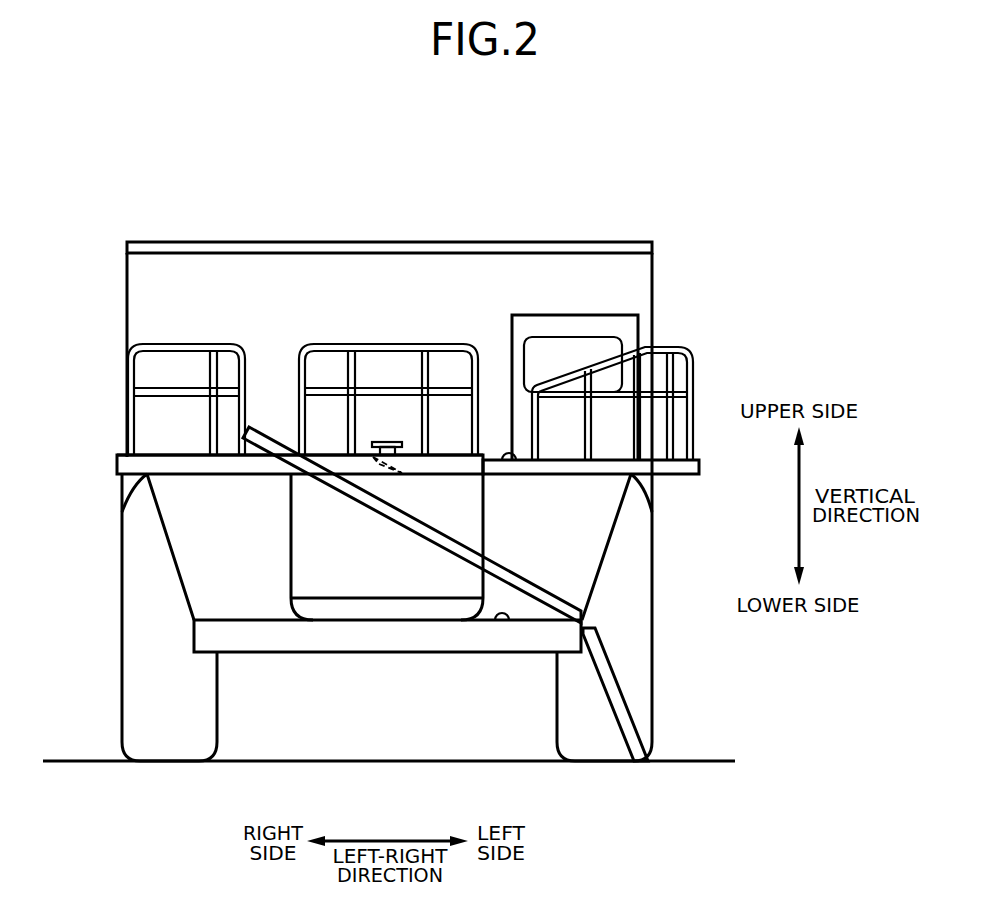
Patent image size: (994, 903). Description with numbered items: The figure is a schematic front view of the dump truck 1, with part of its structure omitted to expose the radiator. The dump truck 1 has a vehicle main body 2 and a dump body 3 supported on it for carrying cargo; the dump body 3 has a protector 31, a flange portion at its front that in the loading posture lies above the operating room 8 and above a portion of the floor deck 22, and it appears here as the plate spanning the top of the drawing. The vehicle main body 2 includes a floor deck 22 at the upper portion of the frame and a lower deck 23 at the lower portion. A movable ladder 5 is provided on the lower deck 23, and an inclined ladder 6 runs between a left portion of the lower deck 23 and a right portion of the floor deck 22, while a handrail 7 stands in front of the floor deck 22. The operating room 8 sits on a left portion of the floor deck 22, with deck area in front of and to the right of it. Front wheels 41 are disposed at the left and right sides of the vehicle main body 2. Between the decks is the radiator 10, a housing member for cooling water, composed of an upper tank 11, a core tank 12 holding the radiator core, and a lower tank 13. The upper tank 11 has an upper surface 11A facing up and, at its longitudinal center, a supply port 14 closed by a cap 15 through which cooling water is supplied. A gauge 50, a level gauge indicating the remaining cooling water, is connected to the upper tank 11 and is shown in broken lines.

The dump truck 1 is at (695, 192).
The vehicle main body 2 is at (145, 452).
The dump body 3 is at (606, 240).
The movable ladder 5 is at (624, 717).
The inclined ladder 6 is at (547, 605).
The handrail 7 is at (334, 343).
The operating room 8 is at (644, 316).
The radiator 10 is at (287, 539).
The upper tank 11 is at (478, 468).
The upper surface 11A is at (322, 452).
The core tank 12 is at (303, 587).
The lower tank 13 is at (443, 610).
The supply port 14 is at (383, 440).
The cap 15 is at (397, 440).
The floor deck 22 is at (517, 456).
The lower deck 23 is at (508, 624).
The protector 31 is at (366, 242).
The front wheels 41 is at (122, 672).
The gauge 50 is at (385, 462).